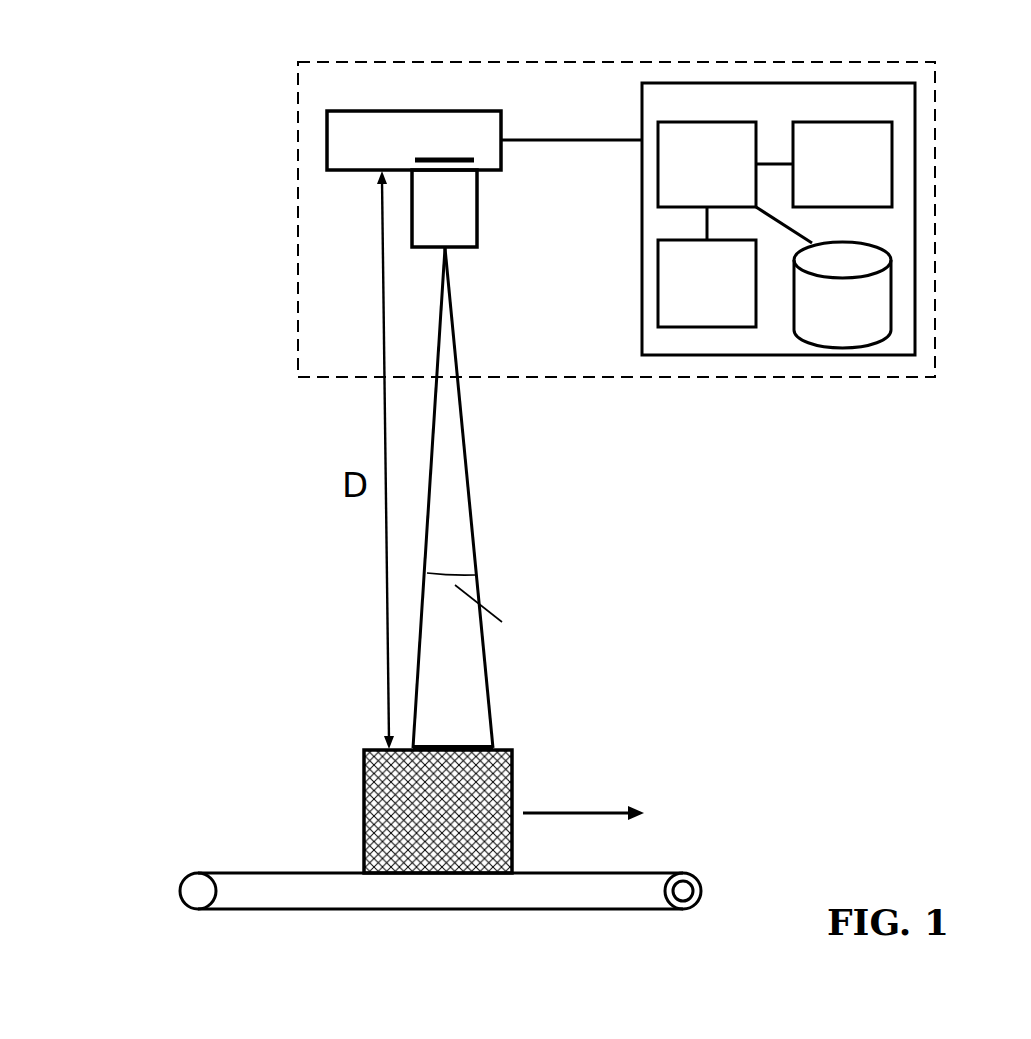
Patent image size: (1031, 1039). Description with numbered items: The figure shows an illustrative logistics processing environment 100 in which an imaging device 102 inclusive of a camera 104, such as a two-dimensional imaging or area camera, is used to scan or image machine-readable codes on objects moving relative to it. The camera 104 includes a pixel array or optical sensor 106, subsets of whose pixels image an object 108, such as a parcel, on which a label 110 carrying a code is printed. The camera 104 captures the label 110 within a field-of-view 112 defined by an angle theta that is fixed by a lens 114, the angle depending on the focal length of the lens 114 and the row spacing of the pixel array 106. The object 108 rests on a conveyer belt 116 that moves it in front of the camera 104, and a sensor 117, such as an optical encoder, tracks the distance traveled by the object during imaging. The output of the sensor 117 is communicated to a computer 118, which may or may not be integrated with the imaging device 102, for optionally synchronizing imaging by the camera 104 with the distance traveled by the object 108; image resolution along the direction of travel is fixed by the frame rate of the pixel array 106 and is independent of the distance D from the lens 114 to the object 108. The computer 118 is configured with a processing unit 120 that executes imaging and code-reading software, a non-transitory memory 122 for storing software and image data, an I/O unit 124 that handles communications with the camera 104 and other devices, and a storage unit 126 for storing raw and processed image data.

The logistics processing environment 100 is at (176, 158).
The imaging device 102 is at (298, 72).
The camera 104 is at (325, 143).
The pixel array 106 is at (463, 154).
The object 108 is at (510, 783).
The label 110 is at (493, 748).
The field-of-view 112 is at (473, 550).
The lens 114 is at (477, 208).
The conveyer belt 116 is at (657, 872).
The sensor 117 is at (697, 888).
The computer 118 is at (912, 225).
The processing unit 120 is at (658, 167).
The memory 122 is at (658, 273).
The I/O unit 124 is at (892, 168).
The storage unit 126 is at (892, 313).